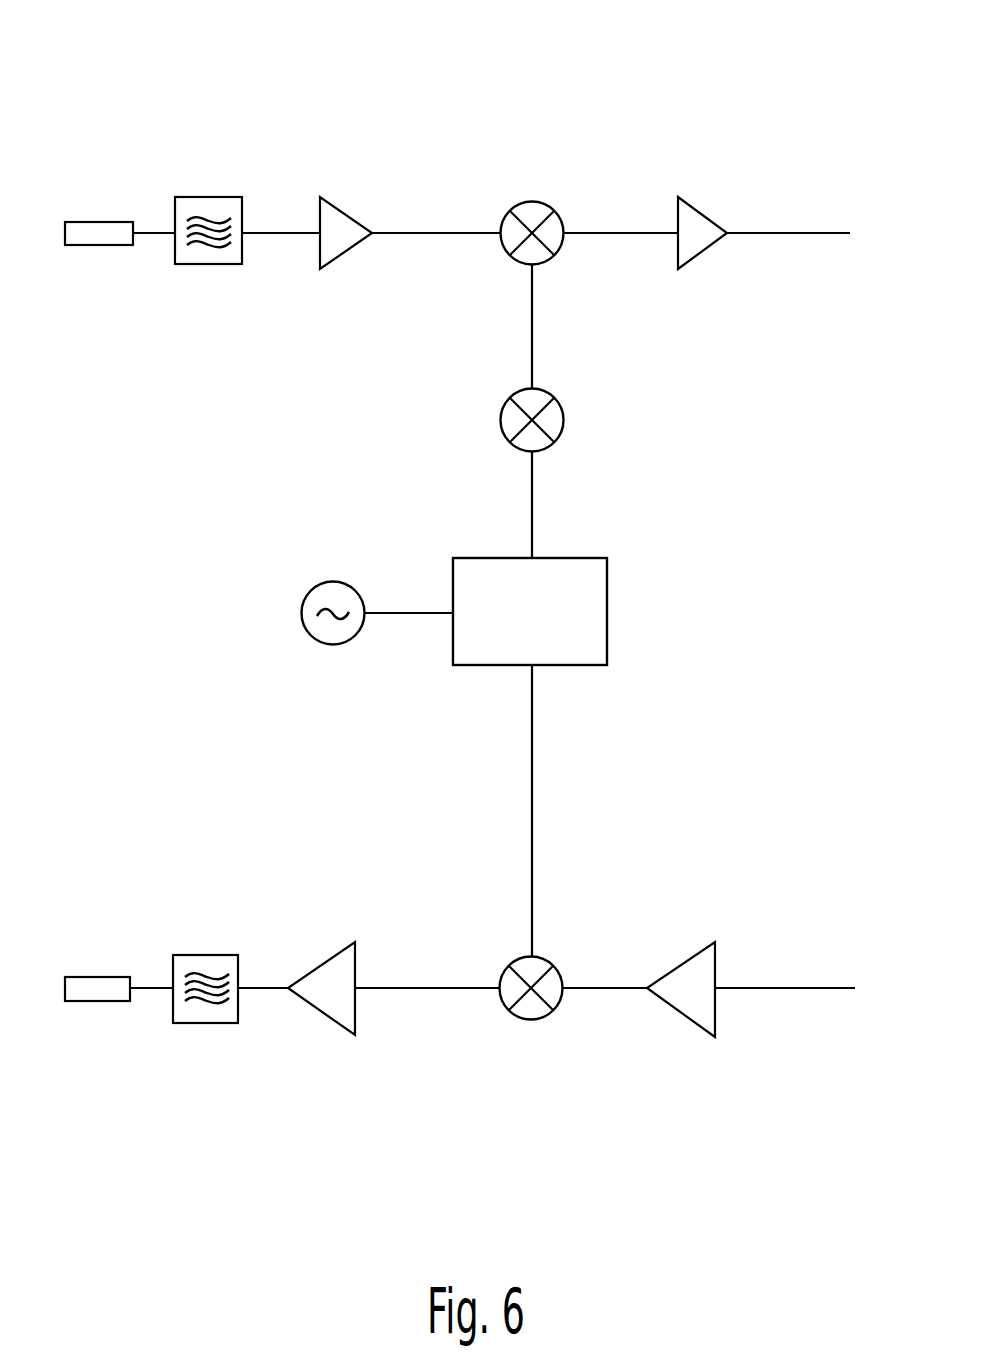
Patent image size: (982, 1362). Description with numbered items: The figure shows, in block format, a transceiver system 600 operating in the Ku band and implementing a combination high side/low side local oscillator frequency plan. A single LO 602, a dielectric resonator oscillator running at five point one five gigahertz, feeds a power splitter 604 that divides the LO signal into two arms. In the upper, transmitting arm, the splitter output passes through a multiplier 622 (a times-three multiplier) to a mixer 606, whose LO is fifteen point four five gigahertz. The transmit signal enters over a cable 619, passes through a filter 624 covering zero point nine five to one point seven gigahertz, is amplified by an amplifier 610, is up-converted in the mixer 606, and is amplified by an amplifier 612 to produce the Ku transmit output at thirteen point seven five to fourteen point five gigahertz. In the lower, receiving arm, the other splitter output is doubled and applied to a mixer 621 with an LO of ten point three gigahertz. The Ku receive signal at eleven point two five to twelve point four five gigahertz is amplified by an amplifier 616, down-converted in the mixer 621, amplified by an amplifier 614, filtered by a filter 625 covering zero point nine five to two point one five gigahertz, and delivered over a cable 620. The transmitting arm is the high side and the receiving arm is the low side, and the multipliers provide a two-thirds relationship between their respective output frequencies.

The transceiver system 600 is at (138, 56).
The cable 619 is at (123, 218).
The filter 624 is at (222, 200).
The amplifier 610 is at (342, 208).
The mixer 606 is at (503, 250).
The amplifier 612 is at (693, 202).
The multiplier 622 is at (543, 390).
The single LO 602 is at (343, 582).
The power splitter 604 is at (607, 593).
The cable 620 is at (65, 978).
The filter 625 is at (188, 955).
The amplifier 614 is at (342, 948).
The mixer 621 is at (518, 960).
The amplifier 616 is at (702, 947).